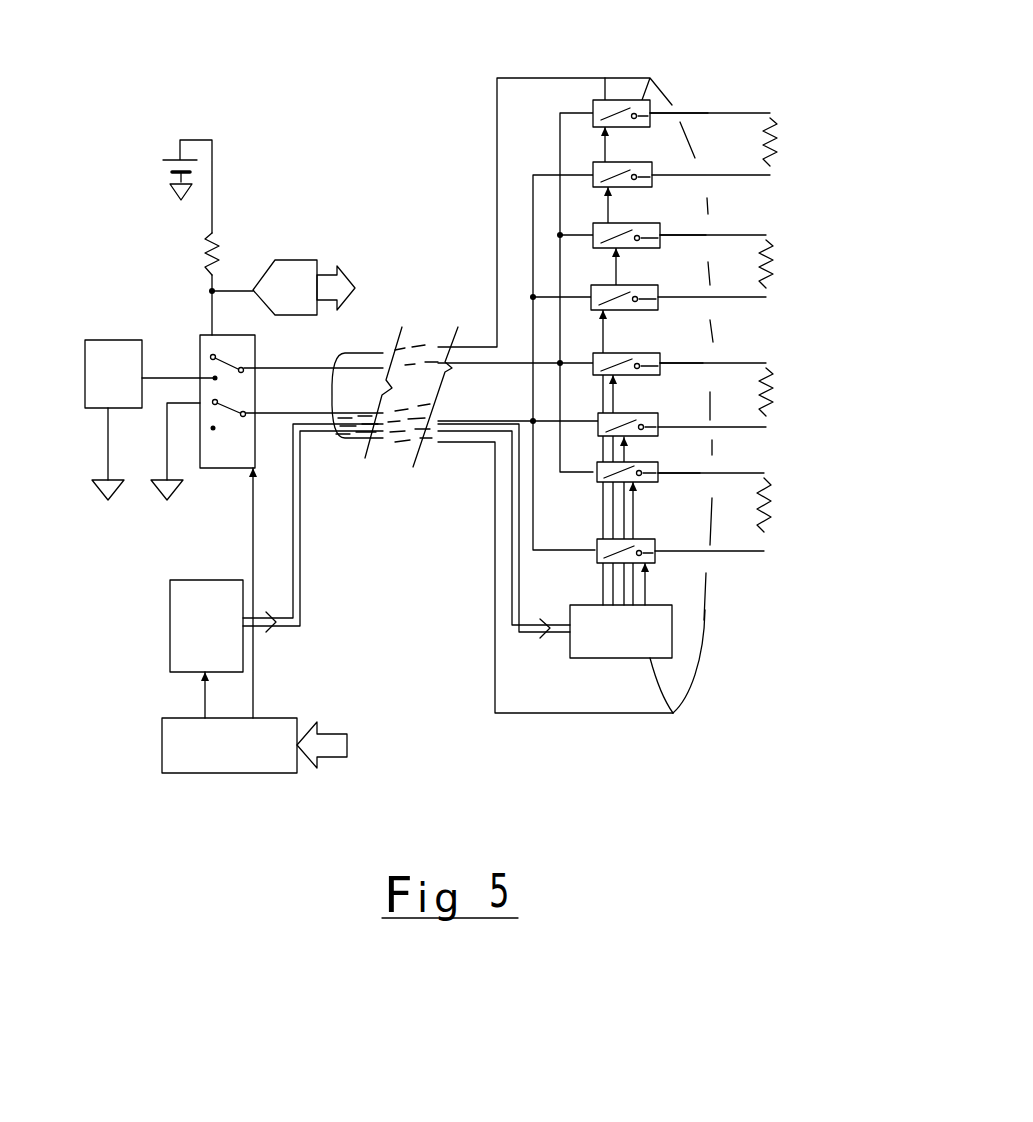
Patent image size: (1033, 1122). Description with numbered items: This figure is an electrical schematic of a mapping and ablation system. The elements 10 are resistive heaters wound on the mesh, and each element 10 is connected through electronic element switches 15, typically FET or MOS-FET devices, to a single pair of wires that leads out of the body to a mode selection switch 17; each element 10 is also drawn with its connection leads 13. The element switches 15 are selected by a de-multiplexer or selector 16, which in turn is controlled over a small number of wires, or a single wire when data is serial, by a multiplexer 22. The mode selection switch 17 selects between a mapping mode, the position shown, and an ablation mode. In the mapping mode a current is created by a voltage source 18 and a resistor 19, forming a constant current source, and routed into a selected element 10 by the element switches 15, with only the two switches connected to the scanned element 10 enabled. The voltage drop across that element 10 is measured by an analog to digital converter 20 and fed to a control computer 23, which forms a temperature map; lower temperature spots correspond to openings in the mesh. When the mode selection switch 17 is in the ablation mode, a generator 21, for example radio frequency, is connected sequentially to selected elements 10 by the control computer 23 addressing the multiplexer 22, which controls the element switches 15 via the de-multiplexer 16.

The elements 10 is at (808, 470).
The sensor connection lead 13 is at (707, 112).
The element switches 15 is at (600, 77).
The de-multiplexer or selector 16 is at (672, 631).
The mode selection switch 17 is at (195, 325).
The voltage source 18 is at (170, 146).
The resistor 19 is at (220, 232).
The analog to digital converter 20 is at (303, 258).
The generator 21 is at (105, 338).
The multiplexer 22 is at (210, 580).
The control computer 23 is at (160, 718).